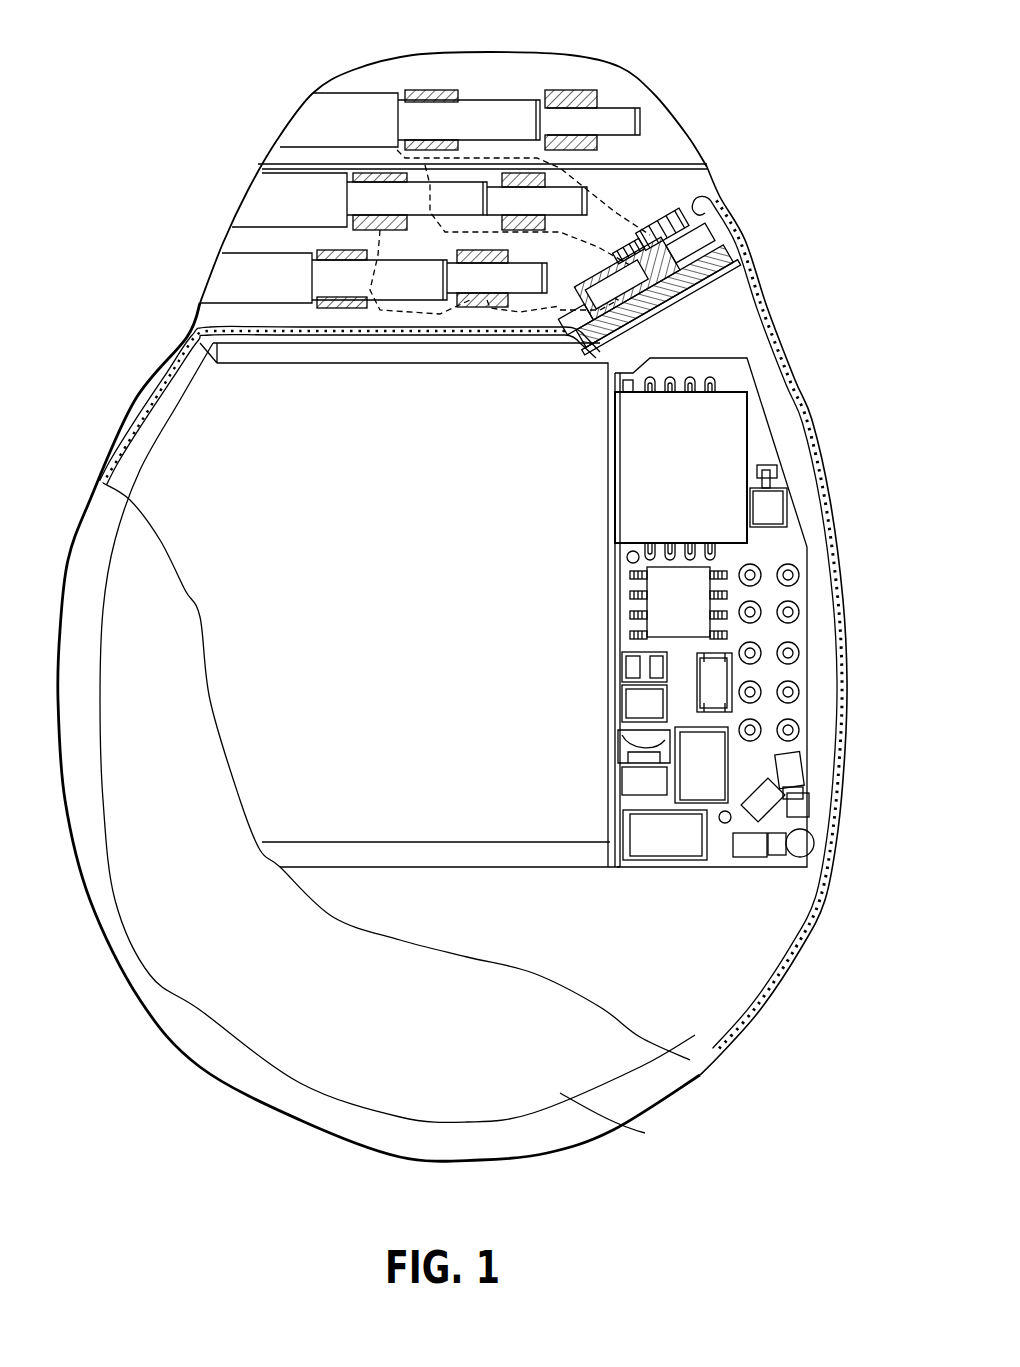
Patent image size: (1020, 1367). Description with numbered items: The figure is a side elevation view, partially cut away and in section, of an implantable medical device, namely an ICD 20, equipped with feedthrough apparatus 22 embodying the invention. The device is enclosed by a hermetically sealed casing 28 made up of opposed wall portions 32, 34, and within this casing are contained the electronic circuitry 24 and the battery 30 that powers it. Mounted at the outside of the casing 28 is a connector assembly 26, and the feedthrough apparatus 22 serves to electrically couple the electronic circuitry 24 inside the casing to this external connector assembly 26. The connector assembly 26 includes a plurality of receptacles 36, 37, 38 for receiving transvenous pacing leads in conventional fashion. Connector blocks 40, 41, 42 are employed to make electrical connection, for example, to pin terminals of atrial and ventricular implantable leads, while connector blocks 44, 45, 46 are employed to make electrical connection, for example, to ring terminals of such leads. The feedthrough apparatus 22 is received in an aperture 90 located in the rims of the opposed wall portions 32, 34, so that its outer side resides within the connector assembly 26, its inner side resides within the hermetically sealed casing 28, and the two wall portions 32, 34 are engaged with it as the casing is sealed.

The ICD 20 is at (285, 1222).
The feedthrough apparatus 22 is at (700, 238).
The electronic circuitry 24 is at (805, 523).
The connector assembly 26 is at (643, 62).
The hermetically sealed casing 28 is at (277, 1027).
The battery 30 is at (188, 498).
The first wall portion 32 is at (768, 344).
The wall portion 34 is at (624, 1123).
The receptacle 36 is at (310, 122).
The receptacle 37 is at (256, 206).
The receptacle 38 is at (235, 282).
The connector block 40 is at (568, 90).
The connector block 41 is at (520, 178).
The connector block 42 is at (482, 308).
The connector block 44 is at (432, 88).
The connector block 45 is at (366, 174).
The connector block 46 is at (332, 308).
The aperture 90 is at (700, 228).